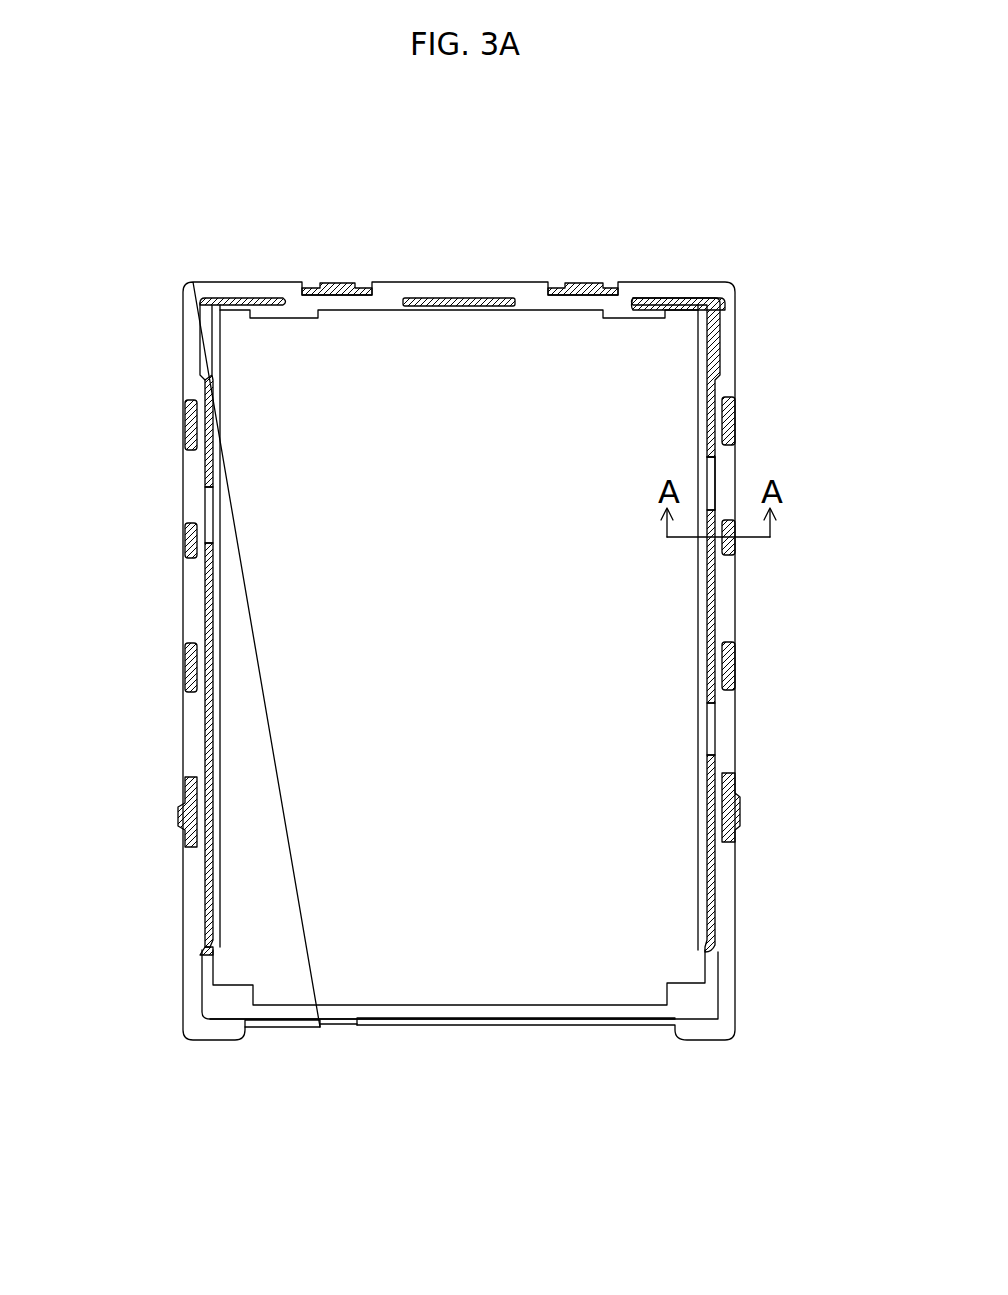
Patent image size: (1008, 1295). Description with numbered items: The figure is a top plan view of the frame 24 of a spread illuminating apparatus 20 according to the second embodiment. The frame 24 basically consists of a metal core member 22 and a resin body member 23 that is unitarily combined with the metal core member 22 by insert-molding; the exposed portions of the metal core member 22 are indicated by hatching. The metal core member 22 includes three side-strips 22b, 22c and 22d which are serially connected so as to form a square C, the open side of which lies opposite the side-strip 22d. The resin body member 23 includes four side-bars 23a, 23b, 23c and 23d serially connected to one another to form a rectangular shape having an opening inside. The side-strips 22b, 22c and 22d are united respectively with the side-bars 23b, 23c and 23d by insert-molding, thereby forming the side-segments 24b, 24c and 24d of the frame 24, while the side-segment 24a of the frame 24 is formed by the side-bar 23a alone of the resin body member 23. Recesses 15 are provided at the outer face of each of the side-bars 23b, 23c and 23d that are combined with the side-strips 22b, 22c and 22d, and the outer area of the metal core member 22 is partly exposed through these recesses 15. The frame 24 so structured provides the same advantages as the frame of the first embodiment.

The spread illuminating apparatus 20 is at (170, 248).
The frame 24 is at (448, 222).
The side-segment 24a is at (460, 1059).
The side-segment 24b is at (835, 383).
The side-segment 24c is at (95, 478).
The side-segment 24d is at (740, 222).
The resin body member 23 is at (422, 298).
The side-bar 23a is at (447, 1028).
The side-bar 23b is at (738, 466).
The side-bar 23c is at (192, 497).
The side-bar 23d is at (690, 298).
The metal core member 22 is at (340, 284).
The side-strip 22b is at (740, 420).
The side-strip 22c is at (190, 540).
The side-strip 22d is at (583, 284).
The recess 15 is at (306, 286).